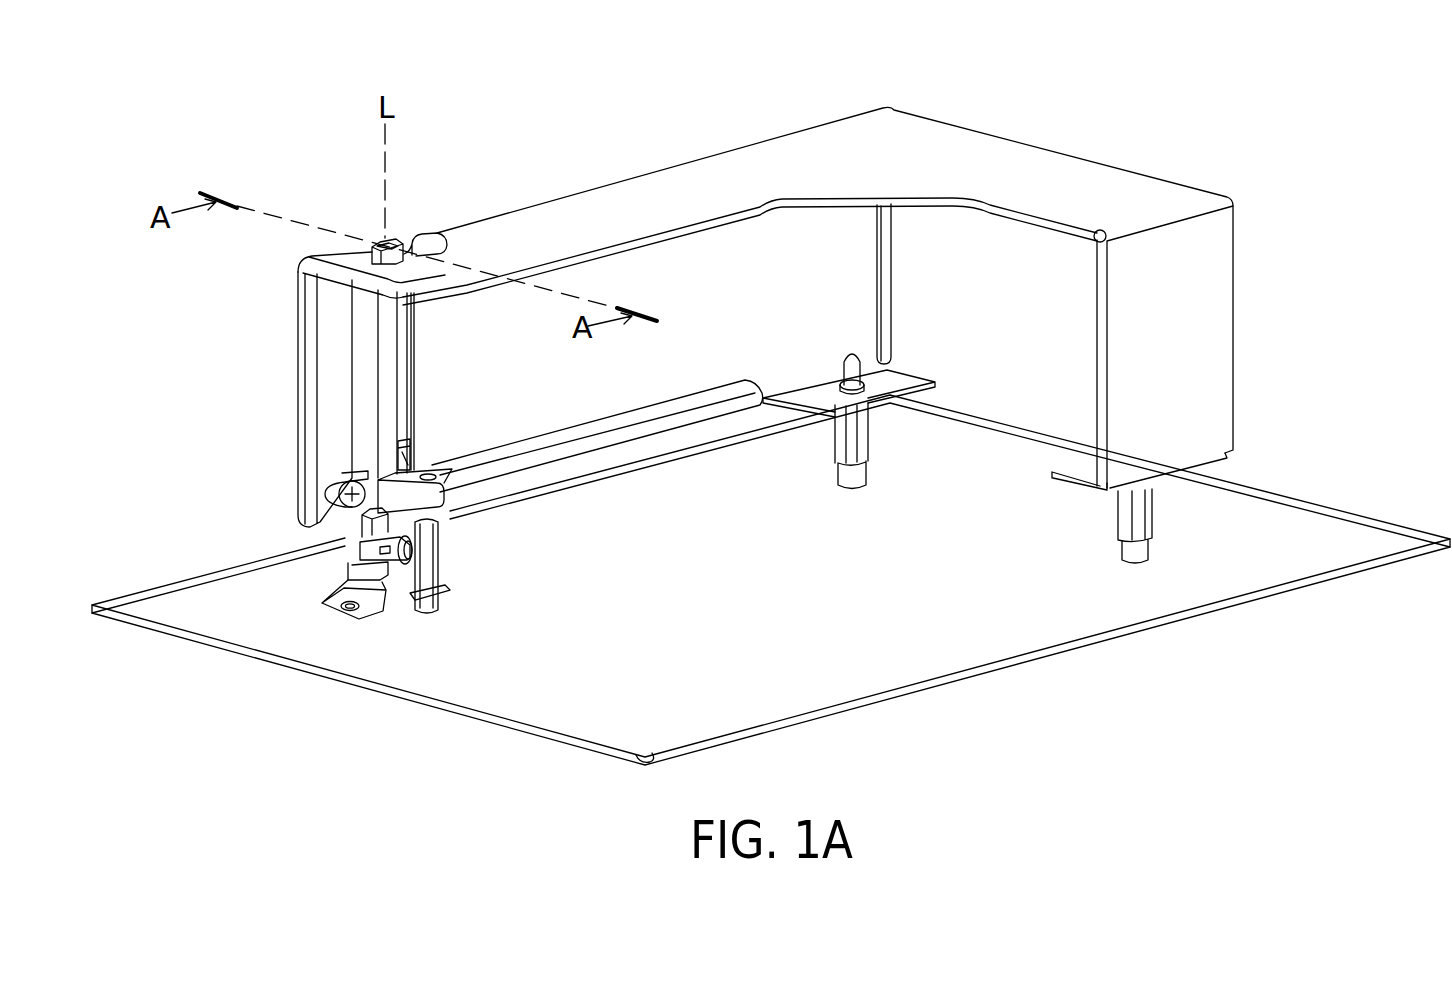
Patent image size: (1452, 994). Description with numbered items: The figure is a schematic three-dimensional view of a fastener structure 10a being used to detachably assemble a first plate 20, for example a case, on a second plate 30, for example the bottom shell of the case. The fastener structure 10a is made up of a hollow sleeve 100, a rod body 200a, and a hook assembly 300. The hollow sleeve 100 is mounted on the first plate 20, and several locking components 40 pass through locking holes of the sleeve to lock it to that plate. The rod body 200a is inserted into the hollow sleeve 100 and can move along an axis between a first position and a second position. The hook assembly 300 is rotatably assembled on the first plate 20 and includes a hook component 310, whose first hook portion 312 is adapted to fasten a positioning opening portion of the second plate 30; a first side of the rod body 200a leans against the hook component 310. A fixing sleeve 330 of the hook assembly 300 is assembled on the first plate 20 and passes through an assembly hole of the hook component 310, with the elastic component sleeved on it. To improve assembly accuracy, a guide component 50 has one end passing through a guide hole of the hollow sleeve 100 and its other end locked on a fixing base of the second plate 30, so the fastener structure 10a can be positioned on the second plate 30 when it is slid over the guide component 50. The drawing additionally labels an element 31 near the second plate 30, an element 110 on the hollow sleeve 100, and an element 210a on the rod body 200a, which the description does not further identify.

The fastener structure 10a is at (136, 372).
The first plate 20 is at (665, 178).
The second plate 30 is at (930, 652).
The fixing hole 31 is at (353, 588).
The locking component 40 is at (333, 486).
The guide component 50 is at (432, 545).
The hollow sleeve 100 is at (367, 378).
The engaging portion 110 is at (408, 470).
The rod body 200a is at (313, 239).
The engaging tab 210a is at (407, 458).
The hook assembly 300 is at (356, 550).
The hook component 310 is at (362, 546).
The first hook portion 312 is at (404, 600).
The fixing sleeve 330 is at (412, 556).